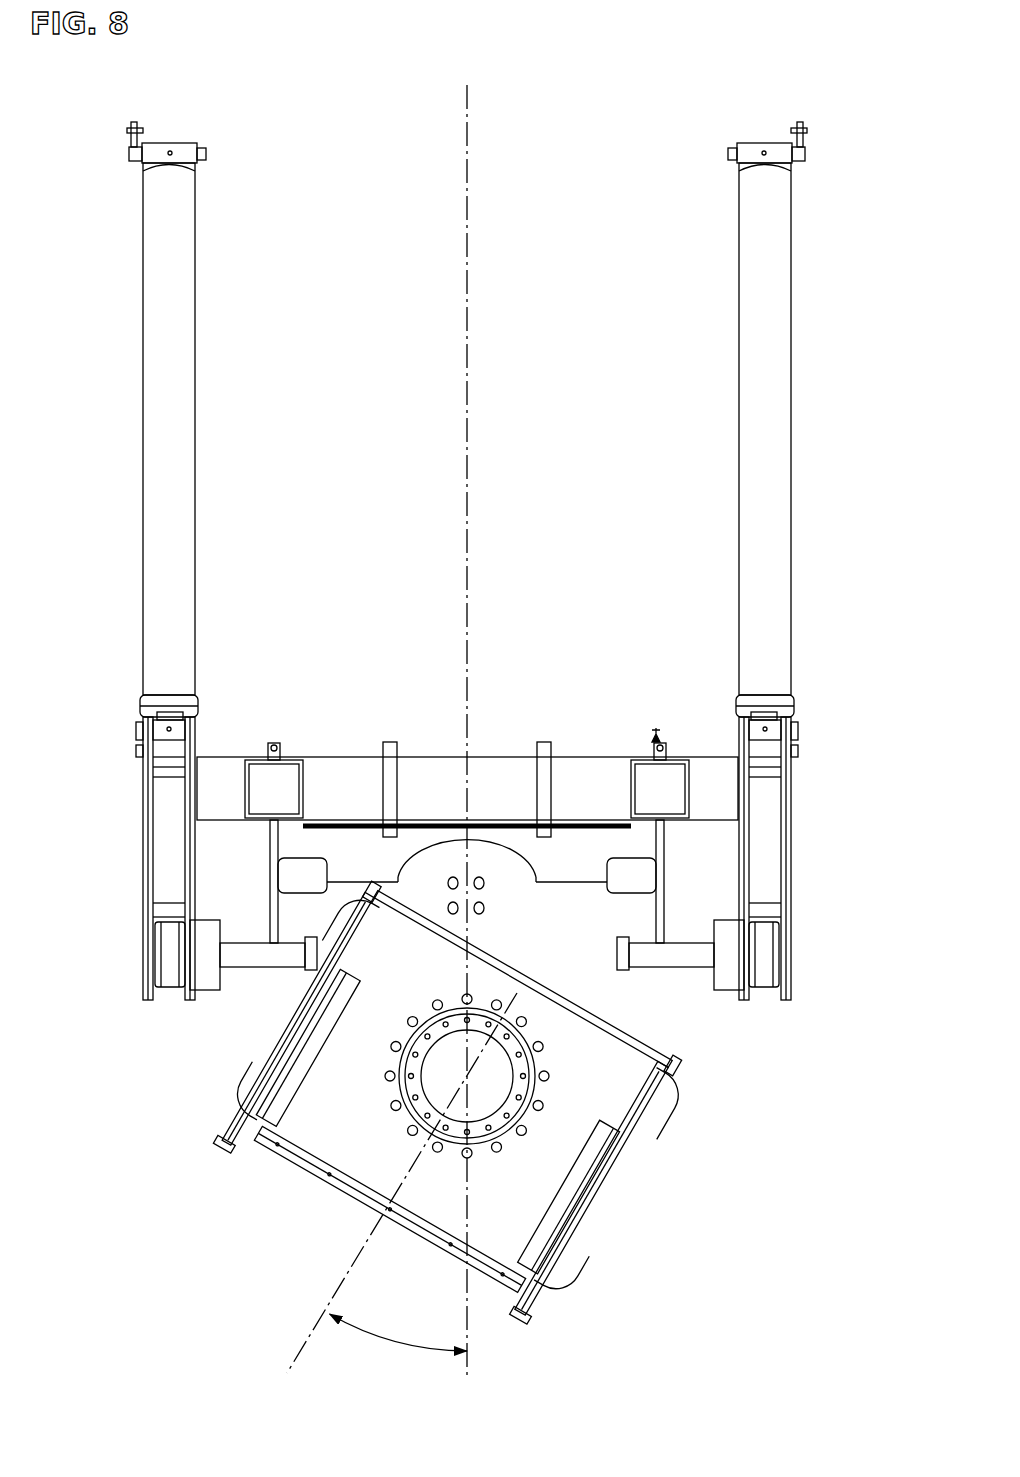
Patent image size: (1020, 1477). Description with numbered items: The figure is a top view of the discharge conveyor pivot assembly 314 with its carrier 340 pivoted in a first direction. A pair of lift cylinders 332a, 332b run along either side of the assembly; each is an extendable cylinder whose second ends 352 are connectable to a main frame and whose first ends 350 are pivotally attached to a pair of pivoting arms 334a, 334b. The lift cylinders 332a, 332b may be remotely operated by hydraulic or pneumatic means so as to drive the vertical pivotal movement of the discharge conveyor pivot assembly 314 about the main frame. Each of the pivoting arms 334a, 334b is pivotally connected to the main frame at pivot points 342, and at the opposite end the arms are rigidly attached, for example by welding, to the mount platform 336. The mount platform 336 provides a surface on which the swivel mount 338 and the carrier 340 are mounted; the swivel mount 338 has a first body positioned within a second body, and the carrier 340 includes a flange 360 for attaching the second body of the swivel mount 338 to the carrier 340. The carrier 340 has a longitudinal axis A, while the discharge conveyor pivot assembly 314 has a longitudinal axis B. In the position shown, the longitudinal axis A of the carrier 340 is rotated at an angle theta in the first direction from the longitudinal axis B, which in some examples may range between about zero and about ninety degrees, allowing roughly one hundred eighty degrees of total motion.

The discharge conveyor pivot assembly 314 is at (605, 148).
The second ends 352 is at (221, 127).
The lift cylinder 332a is at (752, 541).
The lift cylinder 332b is at (166, 511).
The first ends 350 is at (128, 716).
The mount platform 336 is at (590, 778).
The pivoting arm 334a is at (763, 857).
The pivoting arm 334b is at (178, 855).
The pivot points 342 is at (172, 950).
The swivel mount 338 is at (400, 1104).
The carrier 340 is at (307, 1090).
The flange 360 is at (403, 1031).
The longitudinal axis A is at (347, 1268).
The longitudinal axis B is at (472, 343).